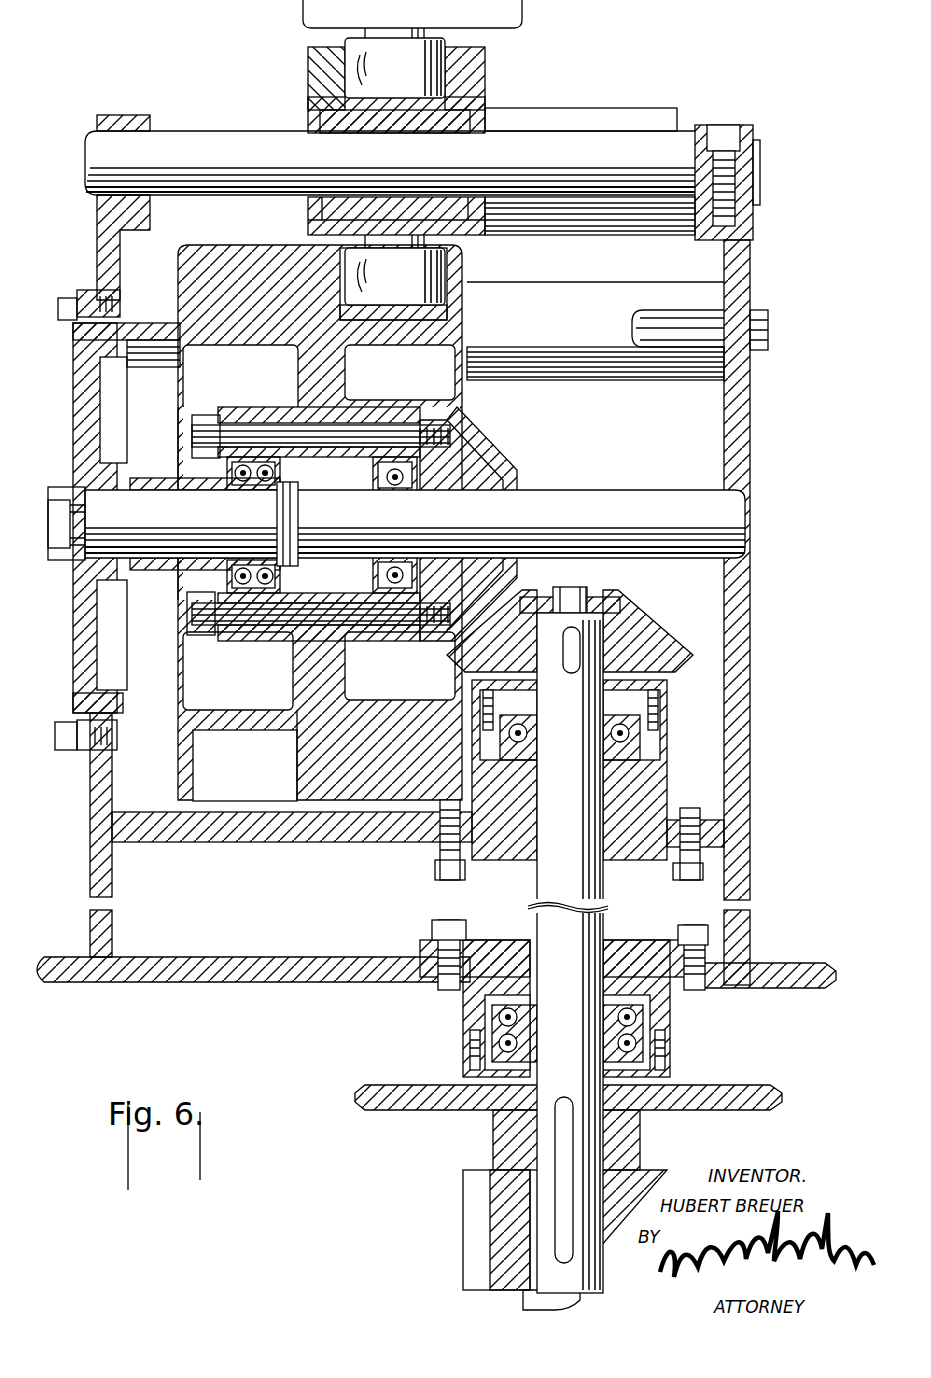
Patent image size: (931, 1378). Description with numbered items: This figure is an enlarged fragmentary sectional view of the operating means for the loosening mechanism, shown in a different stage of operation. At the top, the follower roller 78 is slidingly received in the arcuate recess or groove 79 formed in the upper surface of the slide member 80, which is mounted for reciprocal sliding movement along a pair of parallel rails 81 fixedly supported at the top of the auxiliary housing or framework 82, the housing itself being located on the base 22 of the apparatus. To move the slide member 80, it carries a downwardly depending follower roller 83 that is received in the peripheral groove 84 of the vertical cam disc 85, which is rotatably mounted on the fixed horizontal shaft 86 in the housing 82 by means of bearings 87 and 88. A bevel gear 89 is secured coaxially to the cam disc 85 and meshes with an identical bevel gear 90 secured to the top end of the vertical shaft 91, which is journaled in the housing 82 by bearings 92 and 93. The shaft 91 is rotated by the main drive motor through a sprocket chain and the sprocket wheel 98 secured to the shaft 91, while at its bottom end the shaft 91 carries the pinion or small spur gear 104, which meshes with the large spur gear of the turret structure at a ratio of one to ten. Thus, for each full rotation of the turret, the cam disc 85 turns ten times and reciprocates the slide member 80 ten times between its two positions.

The base 22 is at (797, 963).
The follower roller 78 is at (440, 70).
The arcuate recess or groove 79 is at (310, 93).
The slide member 80 is at (580, 108).
The parallel rails 81 is at (258, 120).
The auxiliary housing or framework 82 is at (752, 407).
The follower roller 83 is at (440, 268).
The peripheral groove 84 is at (457, 320).
The vertical cam disc 85 is at (303, 776).
The fixed horizontal shaft 86 is at (613, 502).
The bearing 87 is at (368, 572).
The bearing 88 is at (276, 472).
The bevel gear 89 is at (492, 446).
The bevel gear 90 is at (682, 617).
The vertical shaft 91 is at (605, 890).
The bearing 92 is at (625, 743).
The bearing 93 is at (662, 1023).
The sprocket wheel 98 is at (771, 1094).
The pinion or small spur gear 104 is at (470, 1238).